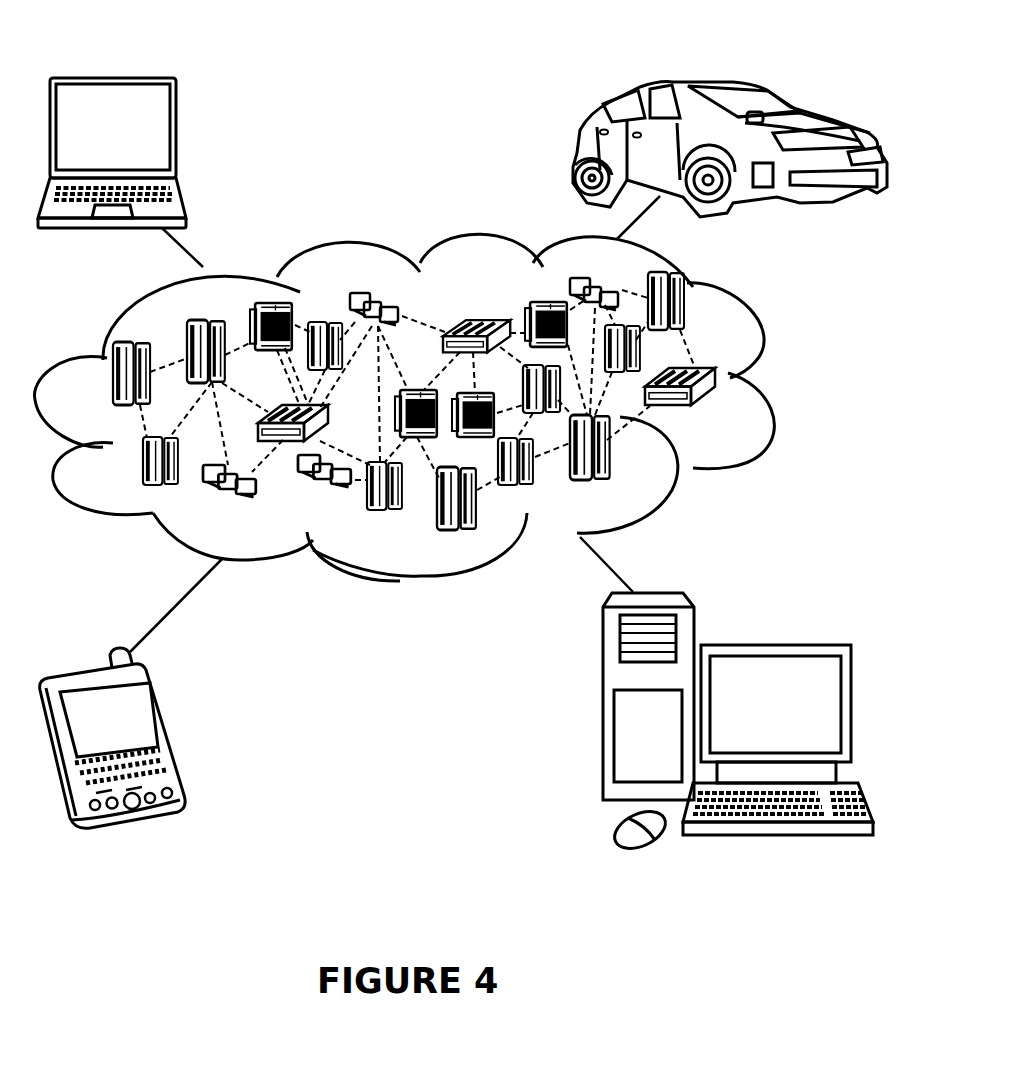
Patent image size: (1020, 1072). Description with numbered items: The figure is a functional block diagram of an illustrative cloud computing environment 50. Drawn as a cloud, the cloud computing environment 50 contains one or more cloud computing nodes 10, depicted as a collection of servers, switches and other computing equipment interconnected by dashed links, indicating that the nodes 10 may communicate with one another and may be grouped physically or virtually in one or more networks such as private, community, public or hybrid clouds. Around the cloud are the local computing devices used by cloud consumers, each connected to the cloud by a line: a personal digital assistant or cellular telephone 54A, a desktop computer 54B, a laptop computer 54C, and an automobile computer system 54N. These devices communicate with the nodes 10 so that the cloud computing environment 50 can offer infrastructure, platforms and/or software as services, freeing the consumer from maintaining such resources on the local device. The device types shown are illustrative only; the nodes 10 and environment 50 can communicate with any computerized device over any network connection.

The cloud computing nodes 10 is at (724, 412).
The cloud computing environment 50 is at (773, 382).
The personal digital assistant or cellular telephone 54A is at (165, 727).
The desktop computer 54B is at (772, 645).
The laptop computer 54C is at (176, 133).
The automobile computer system 54N is at (572, 148).